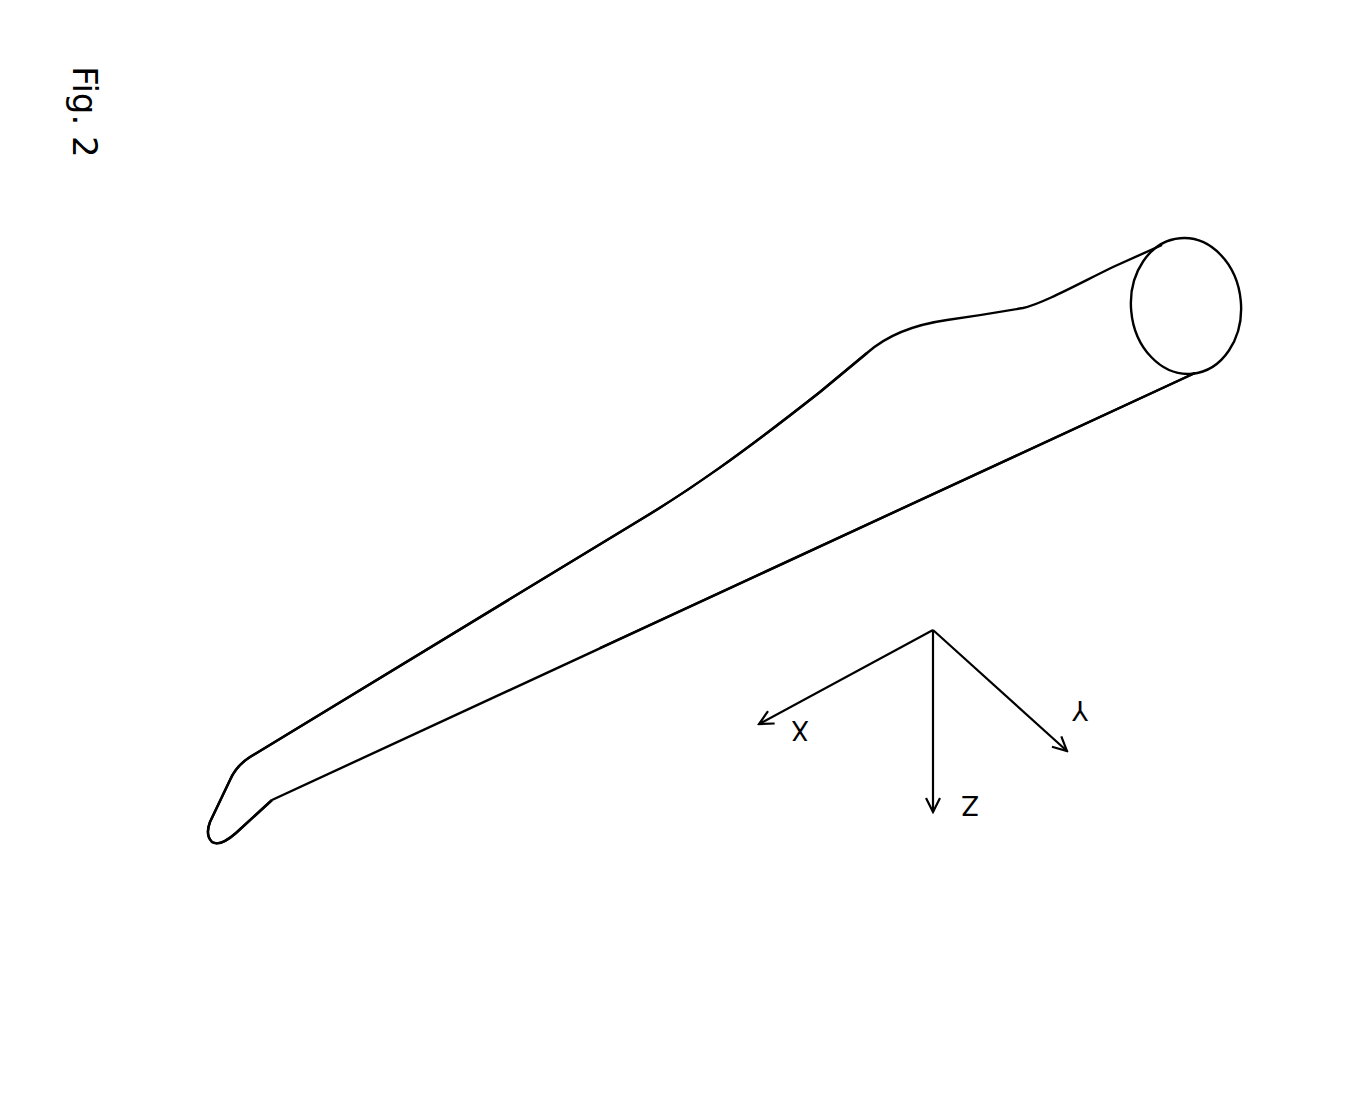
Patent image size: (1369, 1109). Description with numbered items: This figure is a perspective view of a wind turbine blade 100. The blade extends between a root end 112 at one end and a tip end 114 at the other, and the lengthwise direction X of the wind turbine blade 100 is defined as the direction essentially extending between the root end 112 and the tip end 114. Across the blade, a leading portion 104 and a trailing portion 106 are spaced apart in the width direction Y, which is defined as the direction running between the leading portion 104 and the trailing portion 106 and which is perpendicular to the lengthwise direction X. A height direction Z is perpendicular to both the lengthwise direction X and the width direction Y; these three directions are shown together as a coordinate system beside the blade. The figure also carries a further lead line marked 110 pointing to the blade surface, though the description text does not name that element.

The wind turbine blade 100 is at (1222, 742).
The leading portion 104 is at (1075, 472).
The trailing portion 106 is at (625, 494).
The blade surface 110 is at (532, 613).
The root end 112 is at (1147, 221).
The tip end 114 is at (239, 858).